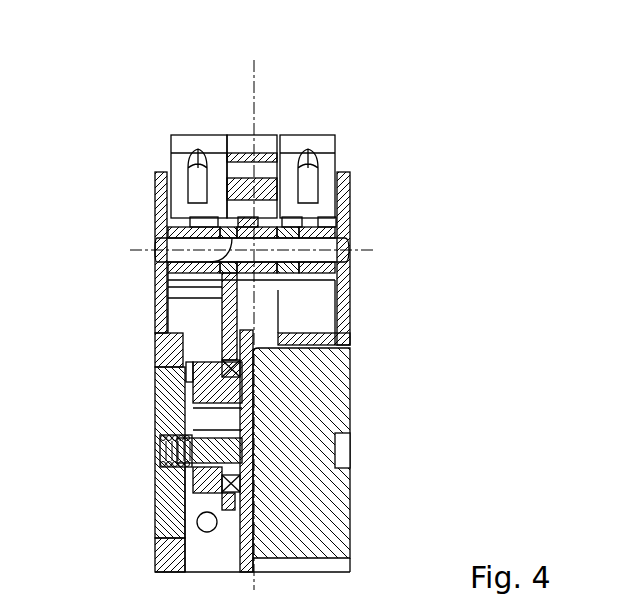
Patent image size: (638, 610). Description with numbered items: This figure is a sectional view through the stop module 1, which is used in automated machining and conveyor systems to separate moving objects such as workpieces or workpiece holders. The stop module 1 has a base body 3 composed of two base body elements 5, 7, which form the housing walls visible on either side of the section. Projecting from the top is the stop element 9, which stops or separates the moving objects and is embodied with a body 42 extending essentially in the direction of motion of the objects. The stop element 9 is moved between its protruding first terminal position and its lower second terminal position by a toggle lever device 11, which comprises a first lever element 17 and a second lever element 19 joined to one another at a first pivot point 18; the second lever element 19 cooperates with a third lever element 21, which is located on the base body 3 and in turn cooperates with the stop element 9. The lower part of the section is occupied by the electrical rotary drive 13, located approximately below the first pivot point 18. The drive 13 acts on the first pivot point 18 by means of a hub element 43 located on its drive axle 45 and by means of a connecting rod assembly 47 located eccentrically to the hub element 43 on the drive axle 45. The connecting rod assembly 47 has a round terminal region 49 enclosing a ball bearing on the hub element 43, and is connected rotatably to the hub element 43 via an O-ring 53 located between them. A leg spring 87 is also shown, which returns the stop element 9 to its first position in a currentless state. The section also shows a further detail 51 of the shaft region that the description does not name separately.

The stop module 1 is at (90, 100).
The base body 3 is at (145, 572).
The base body element 5 is at (155, 186).
The base body element 7 is at (350, 185).
The stop element 9 is at (277, 130).
The toggle lever device 11 is at (145, 270).
The electrical rotary drive 13 is at (325, 393).
The first lever element 17 is at (157, 218).
The first pivot point 18 is at (347, 258).
The second lever element 19 is at (337, 230).
The third lever element 21 is at (327, 147).
The body 42 is at (247, 133).
The hub element 43 is at (208, 480).
The drive axle 45 is at (165, 433).
The connecting rod assembly 47 is at (222, 312).
The round terminal region 49 is at (225, 502).
The shaft end section 51 is at (157, 253).
The O-ring 53 is at (255, 363).
The leg spring 87 is at (162, 453).